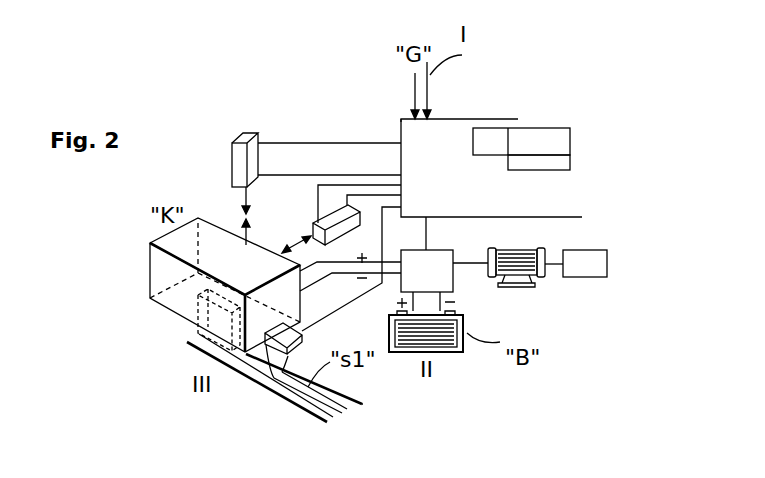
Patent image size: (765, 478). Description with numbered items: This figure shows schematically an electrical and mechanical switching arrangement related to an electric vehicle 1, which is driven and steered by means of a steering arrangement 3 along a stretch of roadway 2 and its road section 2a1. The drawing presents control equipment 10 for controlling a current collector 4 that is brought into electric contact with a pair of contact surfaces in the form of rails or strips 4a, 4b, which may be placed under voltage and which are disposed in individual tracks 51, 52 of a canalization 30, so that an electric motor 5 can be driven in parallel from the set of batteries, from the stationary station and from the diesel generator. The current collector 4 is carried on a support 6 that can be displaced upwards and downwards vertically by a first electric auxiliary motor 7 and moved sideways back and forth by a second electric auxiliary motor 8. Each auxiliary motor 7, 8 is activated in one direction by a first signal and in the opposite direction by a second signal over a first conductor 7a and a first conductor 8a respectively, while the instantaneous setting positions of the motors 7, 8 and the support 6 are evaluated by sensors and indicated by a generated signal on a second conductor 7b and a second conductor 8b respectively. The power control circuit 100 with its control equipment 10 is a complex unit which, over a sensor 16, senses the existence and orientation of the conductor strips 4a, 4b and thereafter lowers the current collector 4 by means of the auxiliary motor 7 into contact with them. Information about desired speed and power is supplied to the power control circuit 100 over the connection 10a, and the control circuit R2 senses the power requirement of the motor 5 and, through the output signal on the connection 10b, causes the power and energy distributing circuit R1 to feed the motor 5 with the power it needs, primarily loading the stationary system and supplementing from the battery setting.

The vehicle 1 is at (286, 156).
The stretch of roadway 2 is at (190, 344).
The steering arrangement 3 is at (497, 147).
The current collector 4 is at (200, 332).
The conductor rail 4a is at (253, 373).
The conductor rail 4b is at (327, 390).
The electric motor 5 is at (513, 250).
The support 6 is at (214, 253).
The first electric auxiliary motor 7 is at (232, 155).
The first conductor 7a is at (340, 175).
The second conductor 7b is at (375, 143).
The second electric auxiliary motor 8 is at (312, 228).
The first conductor 8a is at (318, 198).
The second conductor 8b is at (383, 200).
The control equipment 10 is at (563, 163).
The connection 10a is at (390, 107).
The connection 10b is at (427, 240).
The sensor 16 is at (303, 338).
The canalization 30 is at (288, 392).
The track 51 is at (315, 402).
The track 52 is at (323, 408).
The power control circuit 100 is at (475, 117).
The power and energy distributing circuit R1 is at (453, 283).
The control circuit R2 is at (552, 128).
The road section 2a1 is at (387, 422).